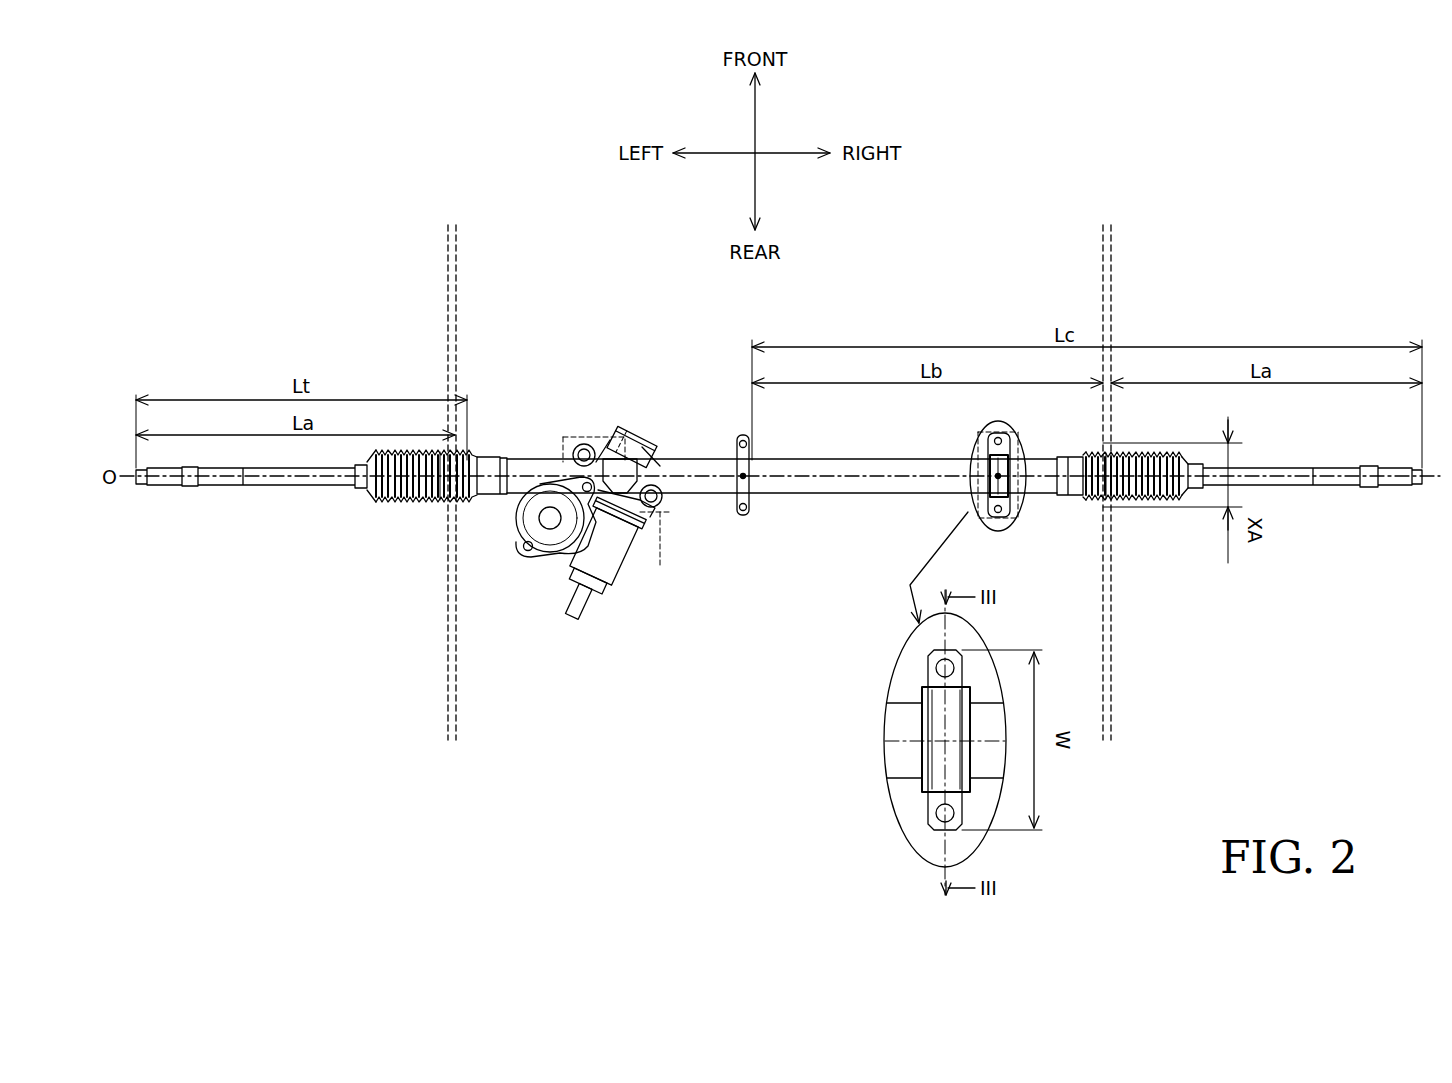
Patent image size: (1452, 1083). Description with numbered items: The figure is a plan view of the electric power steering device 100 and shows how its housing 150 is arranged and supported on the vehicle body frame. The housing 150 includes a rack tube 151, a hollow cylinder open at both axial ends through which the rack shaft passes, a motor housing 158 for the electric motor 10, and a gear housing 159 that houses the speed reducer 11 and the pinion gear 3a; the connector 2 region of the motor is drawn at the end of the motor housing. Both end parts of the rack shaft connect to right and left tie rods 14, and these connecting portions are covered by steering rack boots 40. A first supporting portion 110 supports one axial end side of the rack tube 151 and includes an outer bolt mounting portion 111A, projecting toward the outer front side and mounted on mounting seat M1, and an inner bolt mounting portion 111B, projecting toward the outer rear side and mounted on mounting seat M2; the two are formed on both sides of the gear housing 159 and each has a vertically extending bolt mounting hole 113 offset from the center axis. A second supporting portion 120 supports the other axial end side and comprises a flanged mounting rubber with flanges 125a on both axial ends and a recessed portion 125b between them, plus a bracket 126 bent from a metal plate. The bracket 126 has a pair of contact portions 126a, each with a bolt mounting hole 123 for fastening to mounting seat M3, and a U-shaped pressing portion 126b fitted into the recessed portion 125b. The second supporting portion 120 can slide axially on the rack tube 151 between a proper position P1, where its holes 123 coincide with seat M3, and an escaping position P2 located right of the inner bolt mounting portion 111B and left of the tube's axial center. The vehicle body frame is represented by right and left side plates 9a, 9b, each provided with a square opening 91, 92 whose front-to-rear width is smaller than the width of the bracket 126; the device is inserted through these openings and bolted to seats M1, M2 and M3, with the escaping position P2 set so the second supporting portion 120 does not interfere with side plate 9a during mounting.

The connector 2 is at (568, 612).
The pinion gear 3a is at (646, 440).
The right side plate 9a is at (1113, 288).
The left side plate 9b is at (446, 288).
The electric motor 10 is at (520, 512).
The speed reducer 11 is at (565, 560).
The tie rod 14 is at (302, 488).
The steering rack boot 40 is at (385, 503).
The square opening 91 is at (1100, 504).
The square opening 92 is at (445, 503).
The steering device 100 is at (572, 330).
The first supporting portion 110 is at (618, 506).
The outer bolt mounting portion 111A is at (606, 440).
The inner bolt mounting portion 111B is at (665, 503).
The bolt mounting hole 113 is at (582, 445).
The second supporting portion 120 is at (1012, 543).
The bolt mounting hole 123 is at (938, 668).
The flange 125a is at (926, 757).
The recessed portion 125b is at (936, 778).
The bracket 126 is at (924, 697).
The contact portion 126a is at (930, 656).
The pressing portion 126b is at (934, 745).
The housing 150 is at (780, 524).
The rack tube 151 is at (903, 496).
The motor housing 158 is at (522, 547).
The gear housing 159 is at (624, 548).
The mounting seat M1 is at (568, 446).
The mounting seat M2 is at (659, 551).
The mounting seat M3 is at (1014, 438).
The proper position P1 is at (990, 477).
The escaping position P2 is at (748, 478).